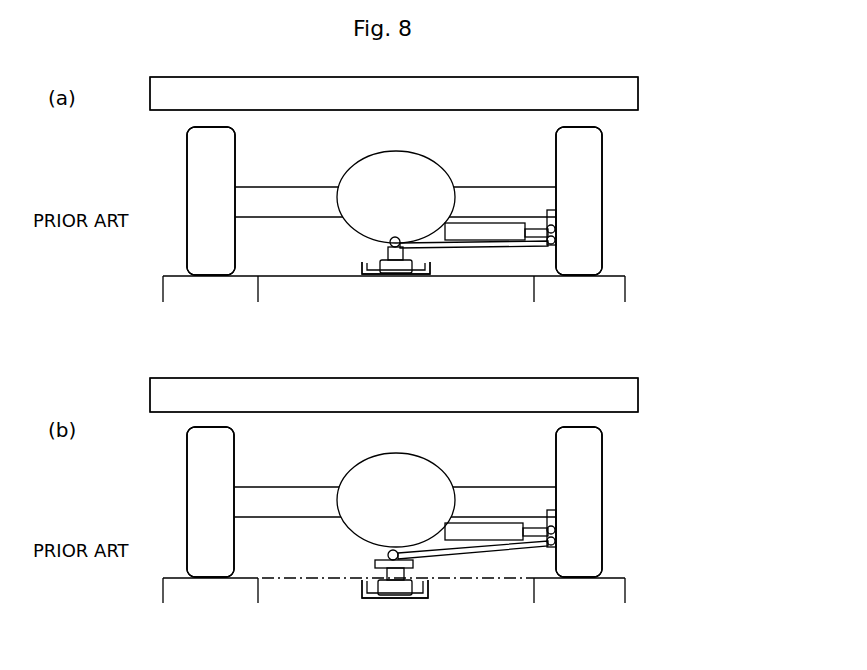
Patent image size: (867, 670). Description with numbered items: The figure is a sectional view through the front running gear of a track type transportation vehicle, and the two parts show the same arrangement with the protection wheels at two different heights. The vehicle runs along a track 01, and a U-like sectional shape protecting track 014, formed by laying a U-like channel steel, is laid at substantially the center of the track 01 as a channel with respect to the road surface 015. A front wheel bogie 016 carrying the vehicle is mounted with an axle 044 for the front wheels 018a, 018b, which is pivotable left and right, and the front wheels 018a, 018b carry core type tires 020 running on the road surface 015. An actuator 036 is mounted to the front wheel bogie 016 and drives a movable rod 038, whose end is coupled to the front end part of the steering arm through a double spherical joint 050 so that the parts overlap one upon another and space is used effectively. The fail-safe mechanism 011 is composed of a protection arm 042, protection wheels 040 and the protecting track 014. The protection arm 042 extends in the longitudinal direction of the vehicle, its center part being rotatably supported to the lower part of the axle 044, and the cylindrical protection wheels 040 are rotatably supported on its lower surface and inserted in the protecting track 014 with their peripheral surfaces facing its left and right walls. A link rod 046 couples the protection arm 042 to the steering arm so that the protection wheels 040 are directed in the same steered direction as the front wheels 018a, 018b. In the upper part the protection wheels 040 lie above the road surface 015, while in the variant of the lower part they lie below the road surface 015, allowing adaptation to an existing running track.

In FIG. 8a, the track 01 is at (626, 267).
In FIG. 8b, the track 01 is at (626, 570).
In FIG. 8a, the fail-safe mechanism 011 is at (383, 289).
In FIG. 8b, the fail-safe mechanism 011 is at (370, 603).
In FIG. 8a, the U-like sectional shape protecting track 014 is at (362, 275).
In FIG. 8b, the U-like sectional shape protecting track 014 is at (360, 582).
In FIG. 8a, the road surface 015 is at (259, 275).
In FIG. 8b, the road surface 015 is at (261, 578).
In FIG. 8a, the front wheel bogie 016 is at (640, 93).
In FIG. 8b, the front wheel bogie 016 is at (640, 393).
In FIG. 8a, the front wheel 018a is at (699, 172).
In FIG. 8b, the front wheel 018a is at (699, 474).
In FIG. 8a, the front wheel 018b is at (186, 169).
In FIG. 8b, the front wheel 018b is at (186, 471).
In FIG. 8a, the core type tire 020 is at (188, 128).
In FIG. 8b, the core type tire 020 is at (188, 428).
In FIG. 8a, the actuator 036 is at (477, 222).
In FIG. 8b, the actuator 036 is at (483, 520).
In FIG. 8a, the movable rod 038 is at (537, 247).
In FIG. 8b, the movable rod 038 is at (531, 526).
In FIG. 8a, the protection wheel 040 is at (414, 276).
In FIG. 8b, the protection wheel 040 is at (392, 590).
In FIG. 8a, the protection arm 042 is at (385, 256).
In FIG. 8a, the axle 044 is at (265, 185).
In FIG. 8b, the axle 044 is at (281, 487).
In FIG. 8a, the link rod 046 is at (483, 247).
In FIG. 8b, the link rod 046 is at (487, 553).
In FIG. 8a, the double spherical joint 050 is at (548, 213).
In FIG. 8b, the double spherical joint 050 is at (557, 522).